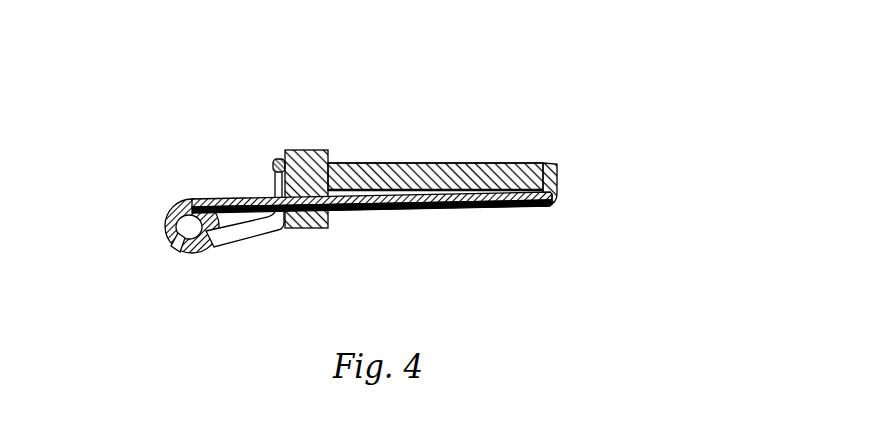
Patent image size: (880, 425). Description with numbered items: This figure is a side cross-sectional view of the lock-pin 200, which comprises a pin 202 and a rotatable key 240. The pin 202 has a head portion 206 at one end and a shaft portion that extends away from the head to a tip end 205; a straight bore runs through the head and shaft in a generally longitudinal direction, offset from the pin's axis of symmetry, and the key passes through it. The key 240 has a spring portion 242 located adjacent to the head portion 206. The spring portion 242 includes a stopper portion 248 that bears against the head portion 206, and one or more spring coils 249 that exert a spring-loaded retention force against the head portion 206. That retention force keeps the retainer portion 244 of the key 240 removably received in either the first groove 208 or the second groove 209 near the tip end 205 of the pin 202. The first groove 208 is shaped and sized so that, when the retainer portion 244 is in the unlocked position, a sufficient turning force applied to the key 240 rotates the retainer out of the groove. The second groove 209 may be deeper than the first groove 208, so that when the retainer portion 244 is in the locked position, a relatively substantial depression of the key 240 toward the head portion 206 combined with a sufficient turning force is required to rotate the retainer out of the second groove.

The lock-pin 200 is at (411, 250).
The pin 202 is at (416, 142).
The tip end 205 is at (518, 163).
The head portion 206 is at (312, 150).
The first groove 208 is at (553, 161).
The second groove 209 is at (544, 210).
The rotatable key 240 is at (148, 205).
The spring portion 242 is at (253, 238).
The retainer portion 244 is at (559, 193).
The stopper portion 248 is at (272, 162).
The spring coils 249 is at (168, 238).